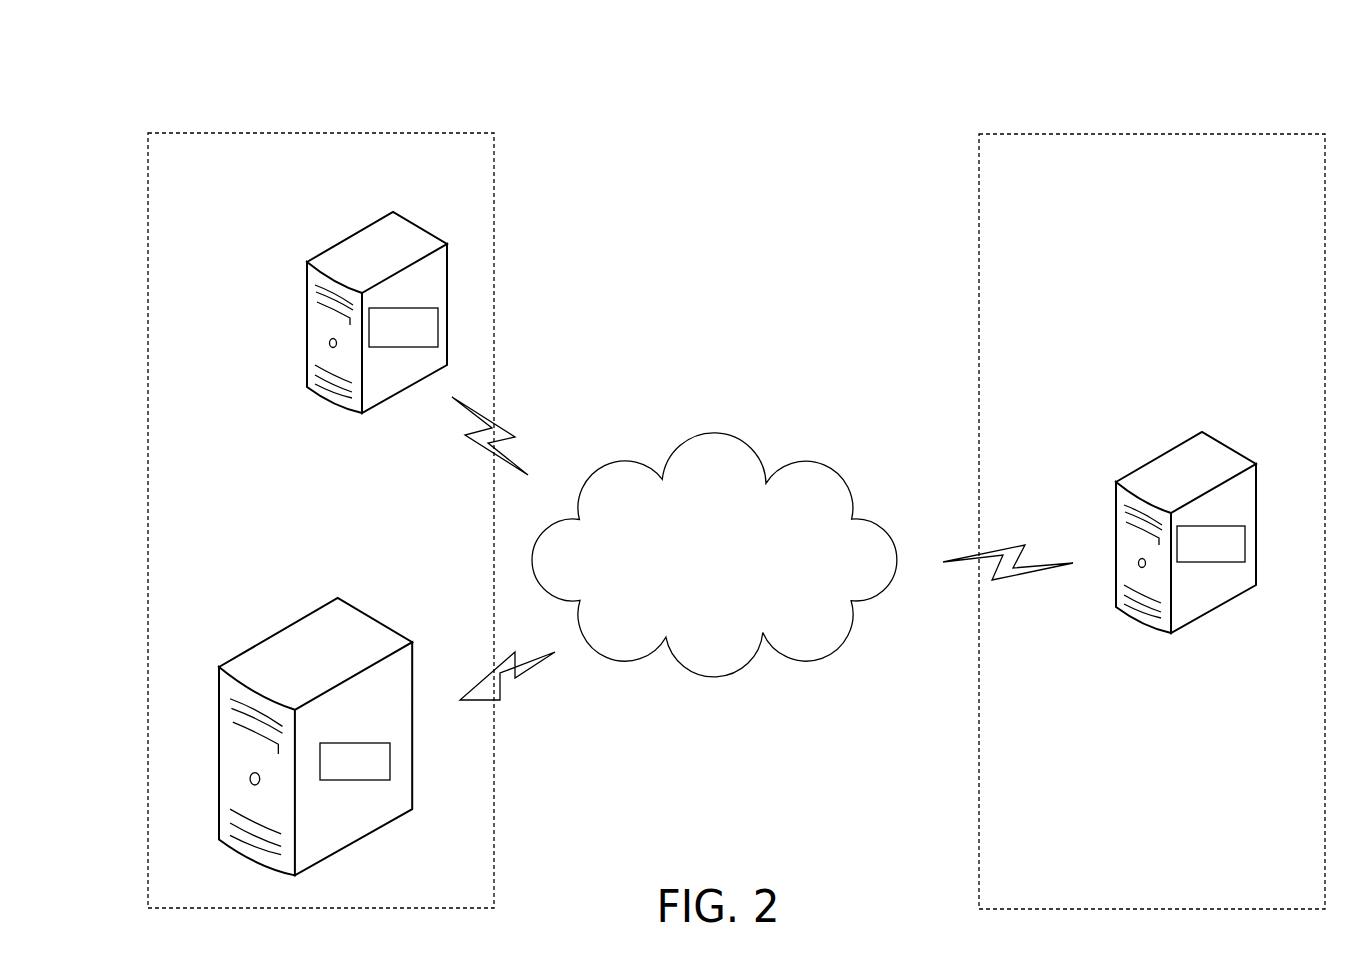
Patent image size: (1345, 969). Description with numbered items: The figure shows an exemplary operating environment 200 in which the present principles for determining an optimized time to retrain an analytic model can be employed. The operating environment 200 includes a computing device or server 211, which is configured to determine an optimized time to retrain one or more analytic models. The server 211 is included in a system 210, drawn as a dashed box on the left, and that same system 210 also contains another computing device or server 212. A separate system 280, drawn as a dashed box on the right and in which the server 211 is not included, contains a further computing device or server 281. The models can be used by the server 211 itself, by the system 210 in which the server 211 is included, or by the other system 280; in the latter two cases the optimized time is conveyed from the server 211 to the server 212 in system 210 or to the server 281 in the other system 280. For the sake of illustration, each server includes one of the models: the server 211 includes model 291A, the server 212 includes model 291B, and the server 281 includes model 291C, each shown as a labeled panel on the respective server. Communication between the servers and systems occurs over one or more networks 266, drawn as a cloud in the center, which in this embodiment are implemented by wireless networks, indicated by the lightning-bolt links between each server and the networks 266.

The operating environment 200 is at (202, 65).
The system 210 is at (505, 132).
The server 211 is at (338, 578).
The server 212 is at (370, 210).
The networks 266 is at (694, 567).
The system 280 is at (968, 132).
The server 281 is at (1187, 410).
The model 291A is at (328, 772).
The model 291B is at (377, 337).
The model 291C is at (1184, 555).